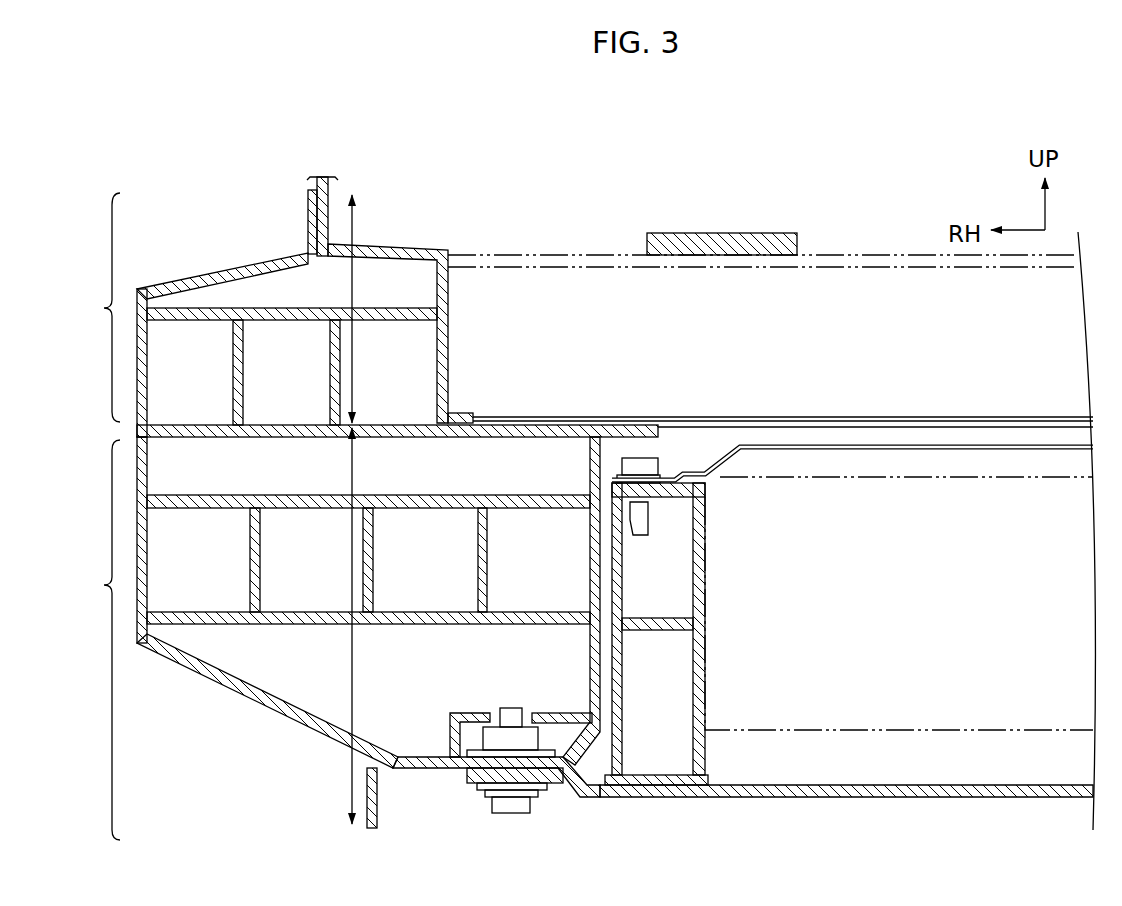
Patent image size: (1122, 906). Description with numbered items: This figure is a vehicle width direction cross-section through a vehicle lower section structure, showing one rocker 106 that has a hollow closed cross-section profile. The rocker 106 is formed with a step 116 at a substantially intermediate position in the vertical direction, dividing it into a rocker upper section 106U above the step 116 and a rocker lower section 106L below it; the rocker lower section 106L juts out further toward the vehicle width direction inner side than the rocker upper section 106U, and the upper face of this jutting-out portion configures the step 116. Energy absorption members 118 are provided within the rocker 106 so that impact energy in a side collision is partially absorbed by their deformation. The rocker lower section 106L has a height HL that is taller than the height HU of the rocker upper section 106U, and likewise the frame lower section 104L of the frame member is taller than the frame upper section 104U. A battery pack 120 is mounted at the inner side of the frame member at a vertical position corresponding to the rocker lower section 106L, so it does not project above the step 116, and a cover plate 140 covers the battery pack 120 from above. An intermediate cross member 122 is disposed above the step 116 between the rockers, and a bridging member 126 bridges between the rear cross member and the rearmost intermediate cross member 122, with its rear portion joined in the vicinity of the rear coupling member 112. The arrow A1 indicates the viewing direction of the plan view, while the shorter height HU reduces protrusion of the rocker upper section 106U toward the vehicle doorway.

The frame upper section 104U is at (217, 272).
The frame lower section 104L is at (236, 699).
The rocker upper section 106U is at (237, 315).
The rocker lower section 106L is at (319, 638).
The rocker 106 is at (425, 773).
The rear coupling member 112 is at (416, 246).
The step 116 is at (572, 417).
The energy absorption member 118 is at (240, 438).
The battery pack 120 is at (650, 799).
The intermediate cross member 122 is at (573, 249).
The bridging member 126 is at (742, 231).
The cover plate 140 is at (913, 419).
The height of upper section HU is at (354, 221).
The height of lower section HL is at (351, 774).
The arrow A1 direction A1 is at (872, 220).